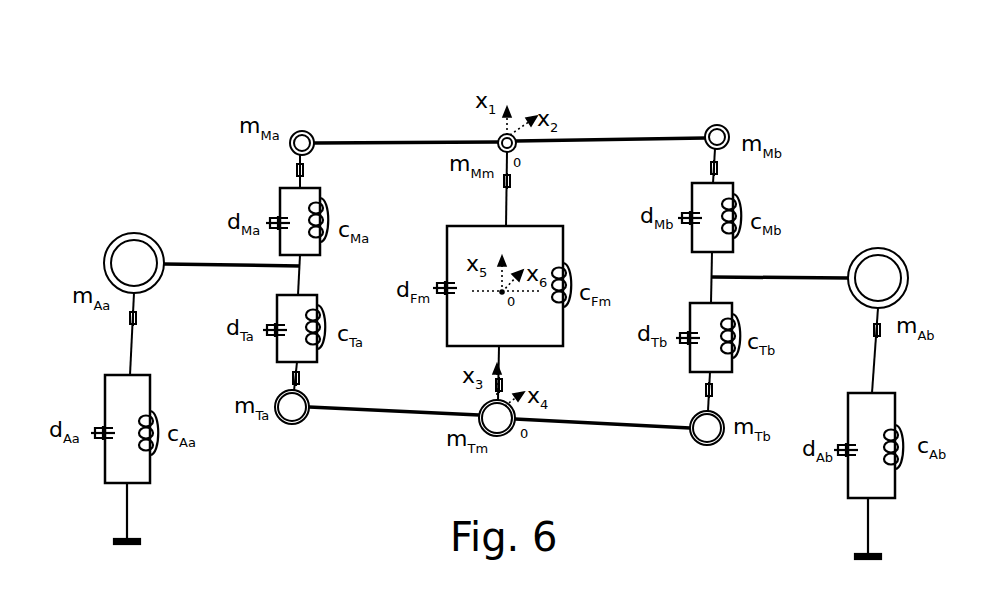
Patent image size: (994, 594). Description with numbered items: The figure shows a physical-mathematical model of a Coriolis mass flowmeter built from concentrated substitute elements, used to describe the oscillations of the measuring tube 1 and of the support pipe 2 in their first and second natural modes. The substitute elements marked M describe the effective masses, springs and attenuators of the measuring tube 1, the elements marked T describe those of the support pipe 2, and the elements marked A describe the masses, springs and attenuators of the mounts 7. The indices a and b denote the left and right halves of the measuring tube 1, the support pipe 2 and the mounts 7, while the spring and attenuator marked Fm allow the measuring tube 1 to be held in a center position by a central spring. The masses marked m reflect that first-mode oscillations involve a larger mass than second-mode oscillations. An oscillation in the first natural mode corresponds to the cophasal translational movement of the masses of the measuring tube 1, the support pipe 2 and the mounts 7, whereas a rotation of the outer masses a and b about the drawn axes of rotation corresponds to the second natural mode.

The measuring tube 1 is at (622, 106).
The support pipe 2 is at (387, 441).
The mounts 7 is at (190, 231).